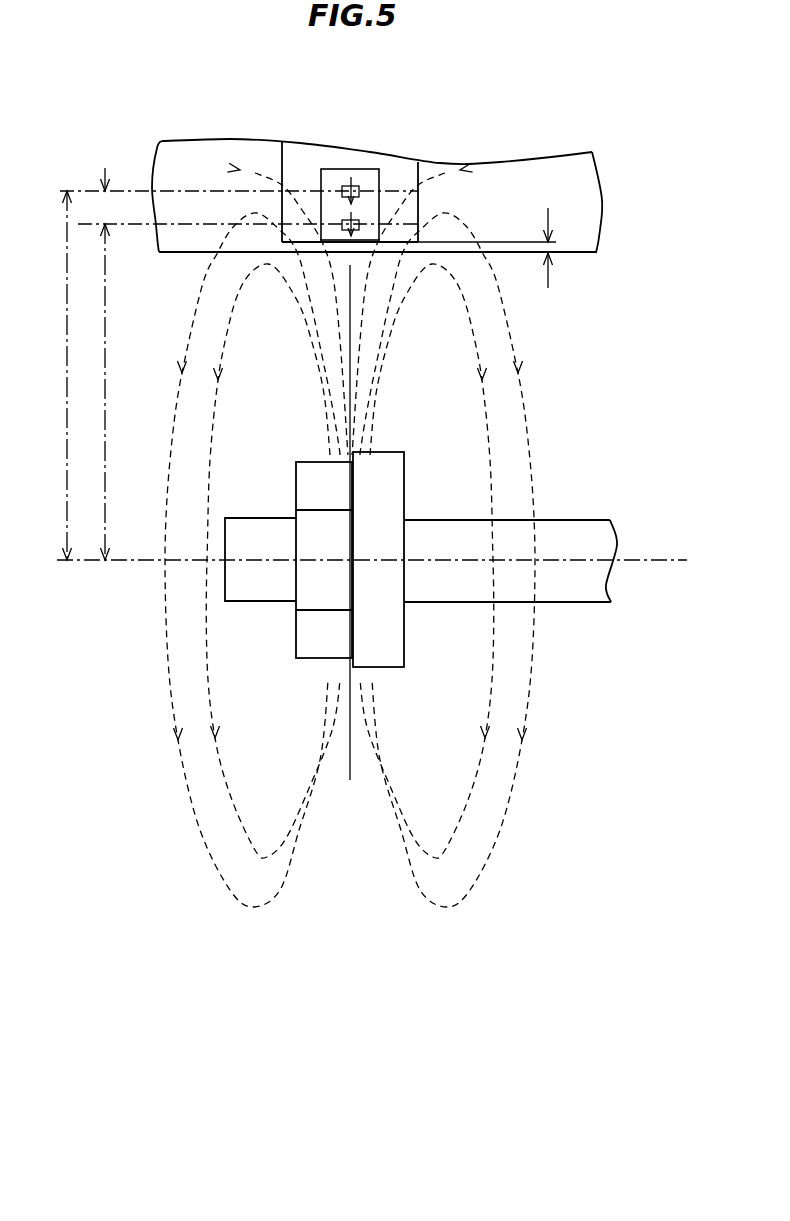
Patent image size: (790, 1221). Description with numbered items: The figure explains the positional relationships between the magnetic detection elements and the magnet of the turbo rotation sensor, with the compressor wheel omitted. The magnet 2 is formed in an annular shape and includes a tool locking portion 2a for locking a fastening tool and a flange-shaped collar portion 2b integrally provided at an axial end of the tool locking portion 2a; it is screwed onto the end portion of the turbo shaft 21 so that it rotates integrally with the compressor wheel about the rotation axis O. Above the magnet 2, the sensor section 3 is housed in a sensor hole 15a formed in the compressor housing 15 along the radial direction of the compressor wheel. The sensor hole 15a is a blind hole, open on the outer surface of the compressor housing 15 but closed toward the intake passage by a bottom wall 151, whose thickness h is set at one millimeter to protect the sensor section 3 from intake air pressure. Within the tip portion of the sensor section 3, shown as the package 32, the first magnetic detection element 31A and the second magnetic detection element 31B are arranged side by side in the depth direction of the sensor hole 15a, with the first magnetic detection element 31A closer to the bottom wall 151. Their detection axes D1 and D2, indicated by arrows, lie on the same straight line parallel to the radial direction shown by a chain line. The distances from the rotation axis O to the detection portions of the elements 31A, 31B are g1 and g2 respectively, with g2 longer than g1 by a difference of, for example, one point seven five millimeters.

The compressor housing 15 is at (167, 170).
The sensor hole 15a is at (283, 175).
The bottom wall 151 is at (343, 248).
The sensor section 3 is at (333, 155).
The sensor package 32 is at (347, 168).
The first magnetic detection element 31A is at (360, 226).
The second magnetic detection element 31B is at (360, 190).
The detection axis D1 is at (352, 214).
The detection axis D2 is at (352, 178).
The magnet 2 is at (351, 531).
The tool locking portion 2a is at (303, 490).
The collar portion 2b is at (397, 488).
The turbo shaft 21 is at (572, 525).
The rotation axis O is at (672, 560).
The thickness h is at (493, 248).
The distance g1 is at (92, 392).
The distance g2 is at (54, 375).